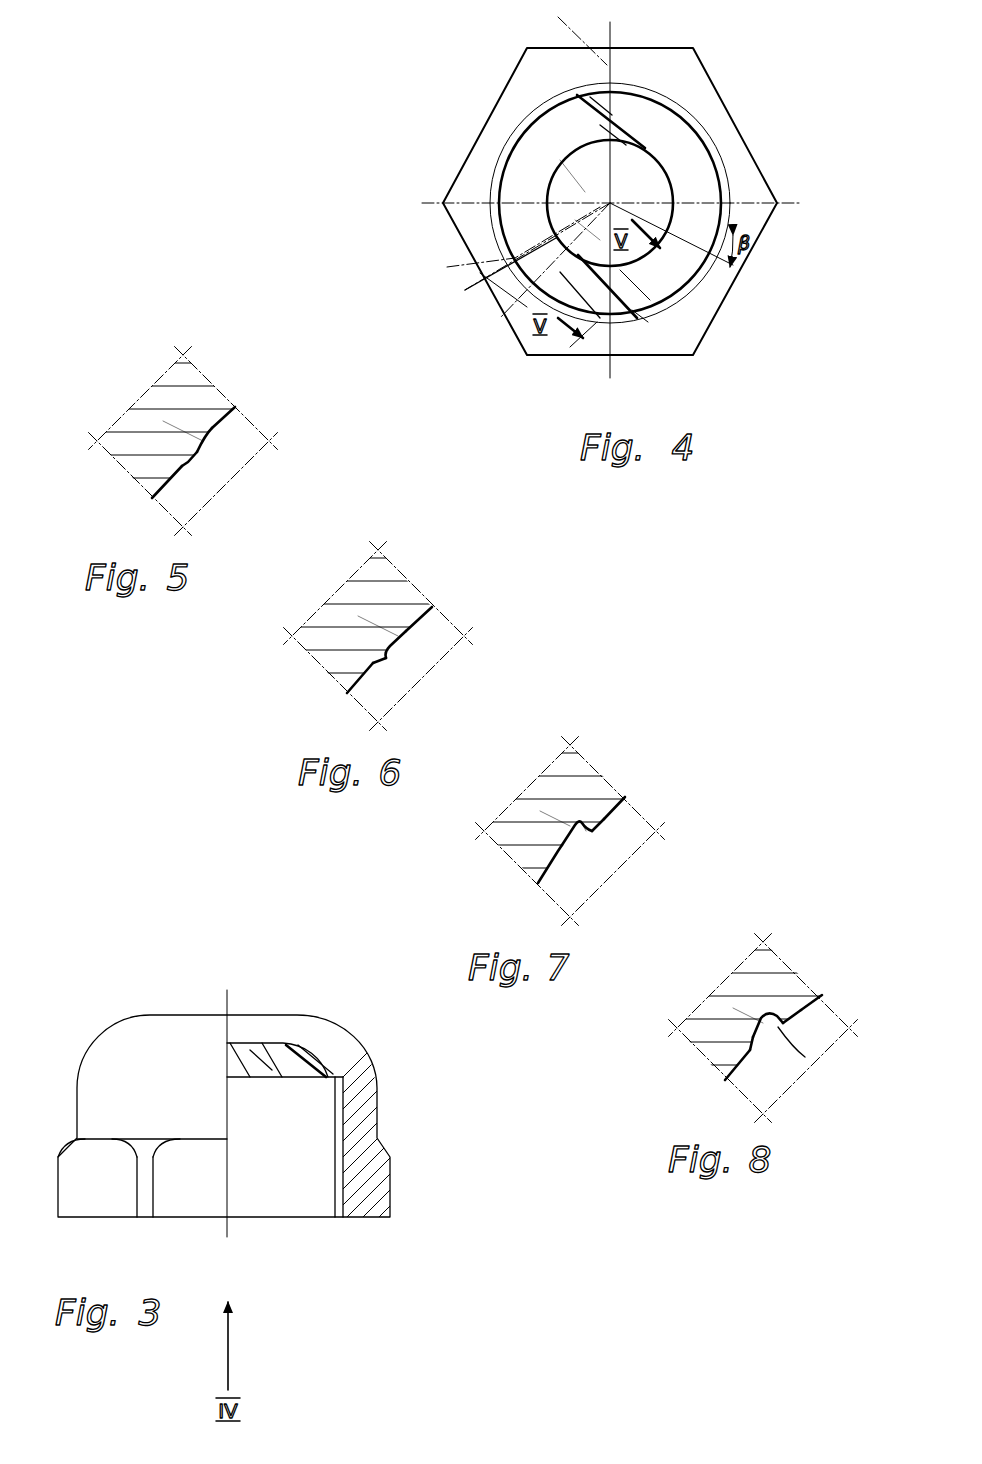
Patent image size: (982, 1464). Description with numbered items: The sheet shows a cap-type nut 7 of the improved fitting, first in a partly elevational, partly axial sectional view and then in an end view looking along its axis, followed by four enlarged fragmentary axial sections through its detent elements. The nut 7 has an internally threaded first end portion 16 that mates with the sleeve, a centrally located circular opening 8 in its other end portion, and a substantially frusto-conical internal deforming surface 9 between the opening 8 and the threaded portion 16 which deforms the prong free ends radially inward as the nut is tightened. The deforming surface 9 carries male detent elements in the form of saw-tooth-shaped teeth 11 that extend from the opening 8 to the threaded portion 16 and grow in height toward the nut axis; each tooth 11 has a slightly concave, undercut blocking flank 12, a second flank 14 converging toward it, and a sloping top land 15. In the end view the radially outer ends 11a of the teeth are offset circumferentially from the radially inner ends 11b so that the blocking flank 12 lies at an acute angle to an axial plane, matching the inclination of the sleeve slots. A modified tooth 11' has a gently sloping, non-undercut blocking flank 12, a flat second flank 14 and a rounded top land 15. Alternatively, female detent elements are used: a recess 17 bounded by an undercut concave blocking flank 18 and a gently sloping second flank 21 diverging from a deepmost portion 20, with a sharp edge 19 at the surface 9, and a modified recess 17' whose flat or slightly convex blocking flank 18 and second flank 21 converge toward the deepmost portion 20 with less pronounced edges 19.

In FIG. 4, the nut 7 is at (458, 125).
In FIG. 3, the nut 7 is at (105, 1012).
In FIG. 5, the nut 7 is at (183, 425).
In FIG. 6, the nut 7 is at (378, 620).
In FIG. 7, the nut 7 is at (570, 815).
In FIG. 8, the nut 7 is at (763, 1003).
In FIG. 4, the circular opening 8 is at (643, 165).
In FIG. 3, the circular opening 8 is at (270, 1012).
In FIG. 4, the internal deforming surface 9 is at (703, 170).
In FIG. 3, the internal deforming surface 9 is at (273, 1063).
In FIG. 5, the internal deforming surface 9 is at (252, 409).
In FIG. 6, the internal deforming surface 9 is at (445, 605).
In FIG. 7, the internal deforming surface 9 is at (634, 788).
In FIG. 8, the internal deforming surface 9 is at (829, 989).
In FIG. 5, the male detent element 11 is at (156, 410).
In FIG. 6, the modified tooth 11' is at (348, 600).
In FIG. 4, the radially outer end of tooth 11a is at (577, 95).
In FIG. 4, the radially inner end of tooth 11b is at (581, 175).
In FIG. 4, the blocking flank 12 is at (613, 308).
In FIG. 3, the blocking flank 12 is at (302, 1072).
In FIG. 5, the blocking flank 12 is at (156, 500).
In FIG. 6, the blocking flank 12 is at (348, 694).
In FIG. 4, the second flank 14 is at (640, 300).
In FIG. 5, the second flank 14 is at (238, 454).
In FIG. 6, the second flank 14 is at (434, 650).
In FIG. 4, the top land 15 is at (641, 318).
In FIG. 5, the top land 15 is at (211, 492).
In FIG. 6, the top land 15 is at (407, 682).
In FIG. 3, the internally threaded first end portion 16 is at (333, 1183).
In FIG. 7, the recess 17 is at (586, 882).
In FIG. 8, the modified recess 17' is at (787, 1073).
In FIG. 7, the blocking flank of recess 18 is at (610, 859).
In FIG. 8, the blocking flank of recess 18 is at (806, 977).
In FIG. 7, the edge 19 is at (631, 843).
In FIG. 8, the edge 19 is at (794, 1054).
In FIG. 7, the deepmost portion of recess 20 is at (529, 792).
In FIG. 8, the deepmost portion of recess 20 is at (719, 994).
In FIG. 7, the second flank of recess 21 is at (513, 870).
In FIG. 8, the second flank of recess 21 is at (701, 1057).